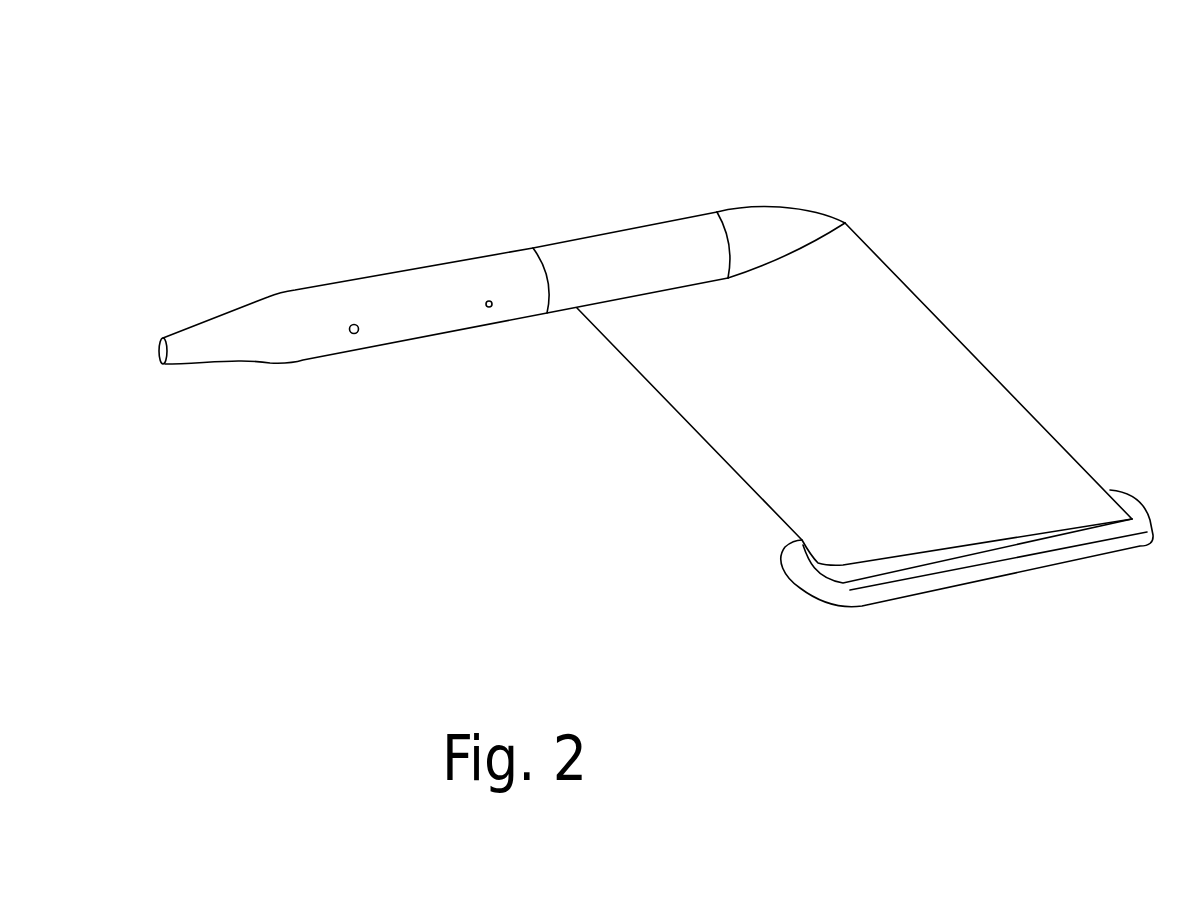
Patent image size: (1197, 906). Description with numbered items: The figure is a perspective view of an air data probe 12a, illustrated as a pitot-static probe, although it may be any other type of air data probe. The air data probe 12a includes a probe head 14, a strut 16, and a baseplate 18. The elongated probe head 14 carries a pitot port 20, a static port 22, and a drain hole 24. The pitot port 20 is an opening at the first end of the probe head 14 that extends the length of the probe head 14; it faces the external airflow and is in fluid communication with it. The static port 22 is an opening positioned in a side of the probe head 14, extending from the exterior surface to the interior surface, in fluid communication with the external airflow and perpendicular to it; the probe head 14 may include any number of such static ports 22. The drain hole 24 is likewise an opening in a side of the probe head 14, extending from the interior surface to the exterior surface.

The air data probe 12a is at (320, 147).
The probe head 14 is at (273, 380).
The strut 16 is at (733, 383).
The baseplate 18 is at (852, 590).
The pitot port 20 is at (157, 355).
The static port 22 is at (352, 327).
The drain hole 24 is at (488, 302).